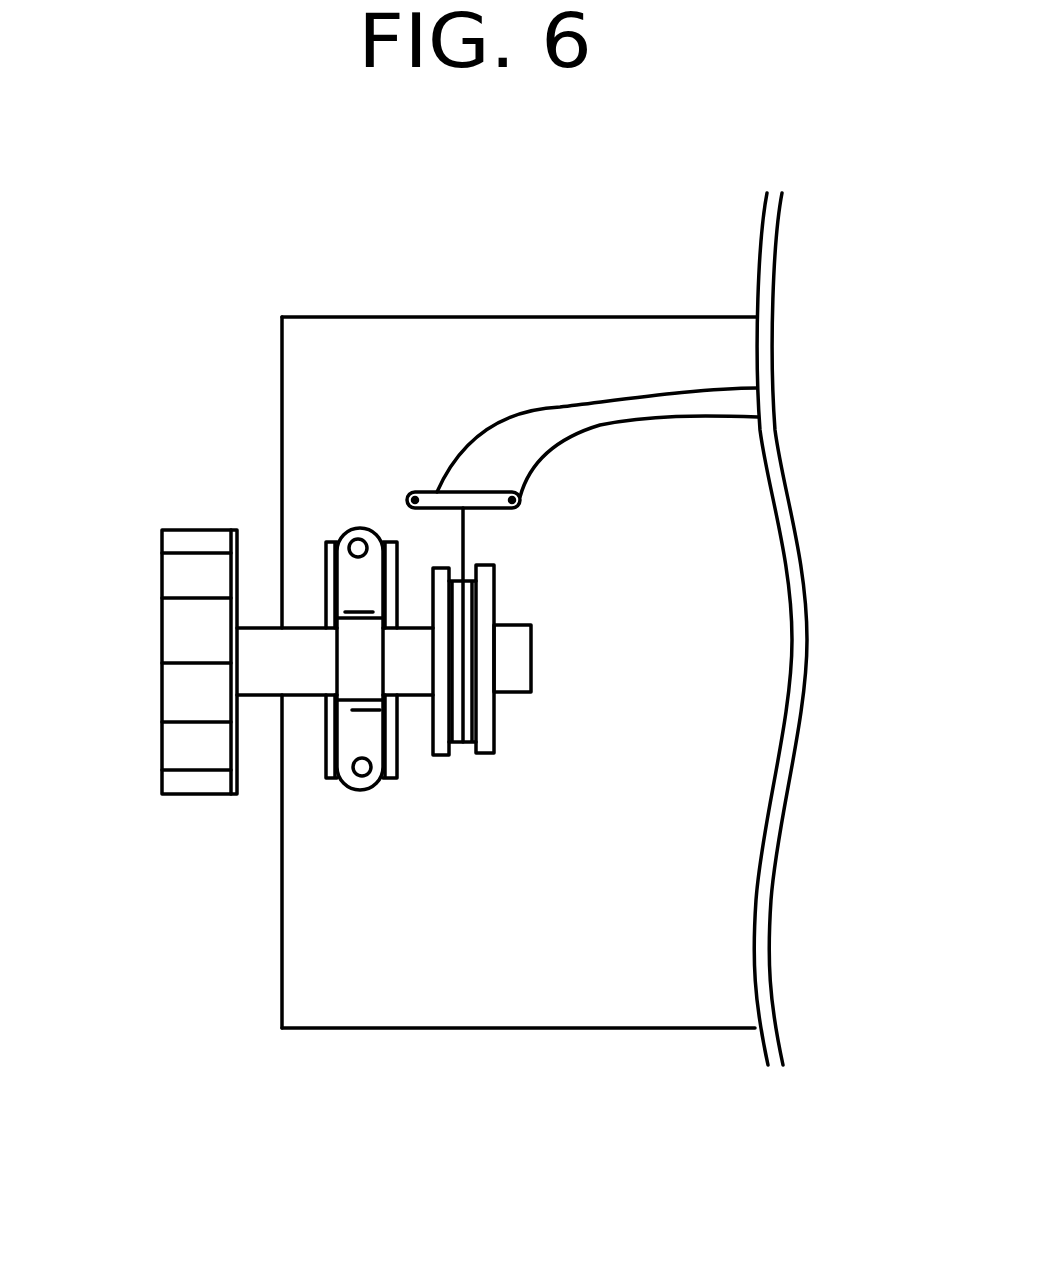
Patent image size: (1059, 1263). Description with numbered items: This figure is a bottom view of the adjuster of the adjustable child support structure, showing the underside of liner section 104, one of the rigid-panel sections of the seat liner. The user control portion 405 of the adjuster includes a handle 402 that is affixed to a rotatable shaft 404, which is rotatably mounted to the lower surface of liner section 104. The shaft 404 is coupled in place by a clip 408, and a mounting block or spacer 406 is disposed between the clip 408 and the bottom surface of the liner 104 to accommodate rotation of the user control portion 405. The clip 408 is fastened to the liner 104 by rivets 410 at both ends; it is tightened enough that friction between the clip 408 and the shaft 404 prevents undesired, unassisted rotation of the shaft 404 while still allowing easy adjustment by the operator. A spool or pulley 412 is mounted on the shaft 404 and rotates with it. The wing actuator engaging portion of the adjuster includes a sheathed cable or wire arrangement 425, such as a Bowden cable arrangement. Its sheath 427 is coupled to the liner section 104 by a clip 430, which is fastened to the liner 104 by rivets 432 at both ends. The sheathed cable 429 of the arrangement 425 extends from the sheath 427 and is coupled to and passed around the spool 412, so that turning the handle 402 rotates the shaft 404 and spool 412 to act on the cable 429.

The liner section 104 is at (609, 909).
The handle 402 is at (177, 638).
The rotatable shaft 404 is at (300, 686).
The user control portion 405 is at (285, 779).
The mounting block or spacer 406 is at (408, 545).
The clip 408 is at (348, 582).
The rivets 410 is at (355, 540).
The spool or pulley 412 is at (496, 724).
The sheathed cable or wire arrangement 425 is at (510, 408).
The sheath 427 is at (675, 410).
The sheathed cable 429 is at (468, 537).
The clip 430 is at (467, 490).
The rivets 432 is at (417, 490).